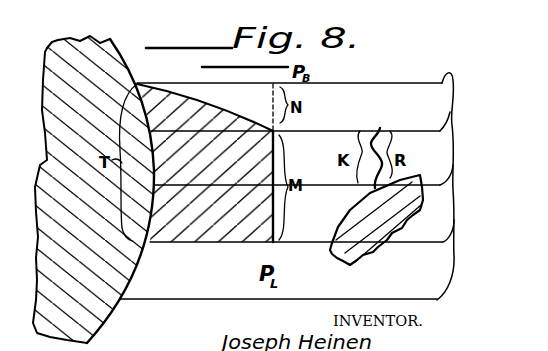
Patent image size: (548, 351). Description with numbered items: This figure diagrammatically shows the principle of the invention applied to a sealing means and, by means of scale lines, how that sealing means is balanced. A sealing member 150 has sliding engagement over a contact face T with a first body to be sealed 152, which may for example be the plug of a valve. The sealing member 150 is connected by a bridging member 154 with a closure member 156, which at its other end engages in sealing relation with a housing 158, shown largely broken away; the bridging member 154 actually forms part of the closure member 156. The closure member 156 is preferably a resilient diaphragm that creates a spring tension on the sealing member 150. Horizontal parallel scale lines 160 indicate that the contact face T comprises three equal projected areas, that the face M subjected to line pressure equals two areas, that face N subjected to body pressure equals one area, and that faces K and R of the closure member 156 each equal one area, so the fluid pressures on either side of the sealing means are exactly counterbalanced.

The sealing member 150 is at (210, 242).
The body to be sealed 152 is at (158, 34).
The bridging member 154 is at (360, 119).
The closure member 156 is at (393, 110).
The housing 158 is at (385, 227).
The scale lines 160 is at (458, 67).